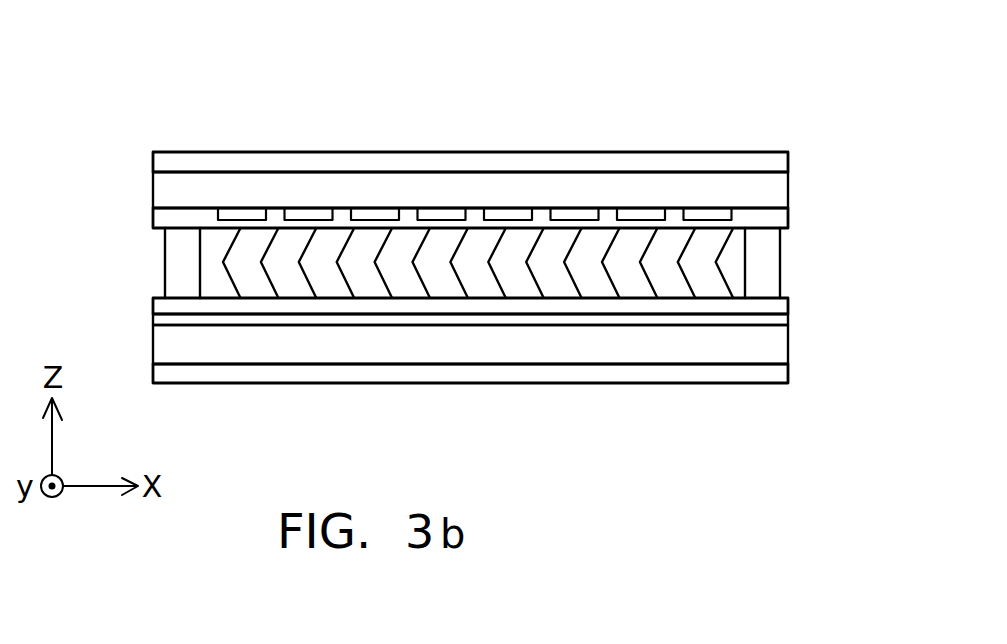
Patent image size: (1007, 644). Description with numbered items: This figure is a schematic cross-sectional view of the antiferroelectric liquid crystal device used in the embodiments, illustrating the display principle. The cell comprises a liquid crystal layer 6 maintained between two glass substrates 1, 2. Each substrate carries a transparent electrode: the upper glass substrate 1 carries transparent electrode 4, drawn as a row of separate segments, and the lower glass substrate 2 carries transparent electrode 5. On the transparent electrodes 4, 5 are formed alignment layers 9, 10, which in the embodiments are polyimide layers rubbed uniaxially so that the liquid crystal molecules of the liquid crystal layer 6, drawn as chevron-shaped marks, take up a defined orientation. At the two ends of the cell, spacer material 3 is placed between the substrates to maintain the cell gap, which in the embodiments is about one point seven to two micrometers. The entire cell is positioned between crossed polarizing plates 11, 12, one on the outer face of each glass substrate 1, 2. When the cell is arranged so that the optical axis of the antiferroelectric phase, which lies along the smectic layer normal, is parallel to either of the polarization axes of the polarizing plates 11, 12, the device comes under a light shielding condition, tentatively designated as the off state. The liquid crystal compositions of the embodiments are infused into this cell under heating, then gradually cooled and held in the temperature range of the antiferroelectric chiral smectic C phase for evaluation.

The glass substrate 1 is at (737, 188).
The glass substrate 2 is at (715, 347).
The spacer material 3 is at (180, 262).
The transparent electrode 4 is at (637, 215).
The transparent electrode 5 is at (370, 322).
The liquid crystal layer 6 is at (258, 240).
The alignment layer 9 is at (183, 218).
The alignment layer 10 is at (238, 303).
The polarizing plate 11 is at (482, 167).
The polarizing plate 12 is at (540, 372).